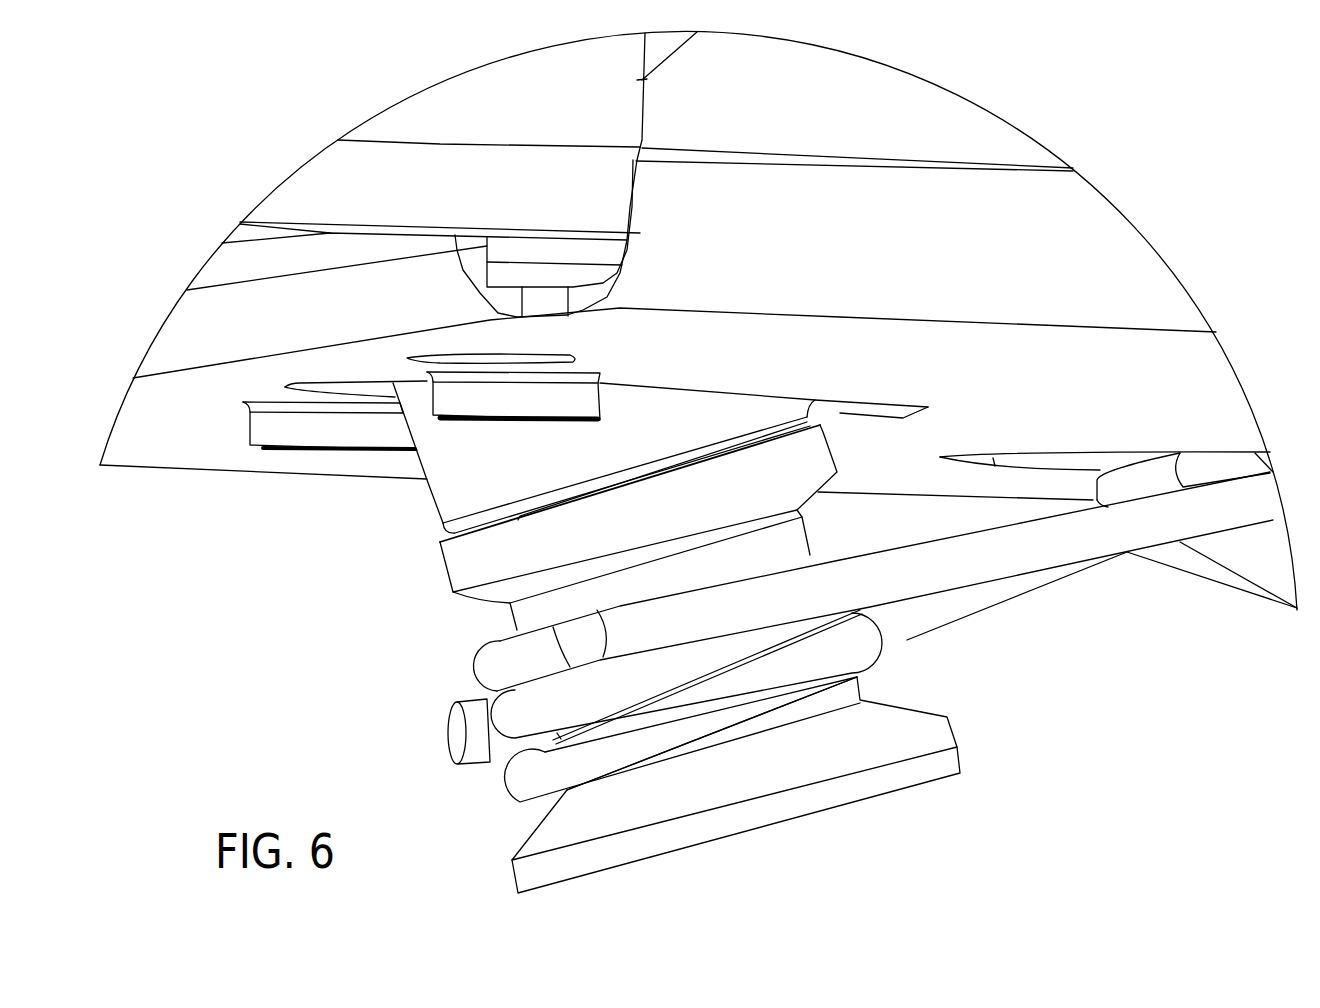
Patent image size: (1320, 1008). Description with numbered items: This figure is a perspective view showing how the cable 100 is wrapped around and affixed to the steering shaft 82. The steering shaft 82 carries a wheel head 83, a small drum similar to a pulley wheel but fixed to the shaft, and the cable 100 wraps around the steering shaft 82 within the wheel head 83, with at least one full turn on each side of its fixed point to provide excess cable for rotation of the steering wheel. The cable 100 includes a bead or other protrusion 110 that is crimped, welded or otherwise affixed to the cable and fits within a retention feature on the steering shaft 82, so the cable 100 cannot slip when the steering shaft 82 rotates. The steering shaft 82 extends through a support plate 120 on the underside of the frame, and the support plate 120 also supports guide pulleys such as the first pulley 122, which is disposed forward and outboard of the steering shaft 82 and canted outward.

The steering shaft 82 is at (448, 466).
The wheel head 83 is at (907, 760).
The cable 100 is at (1108, 533).
The protrusion 110 is at (490, 727).
The support plate 120 is at (1103, 352).
The first pulley 122 is at (1223, 578).